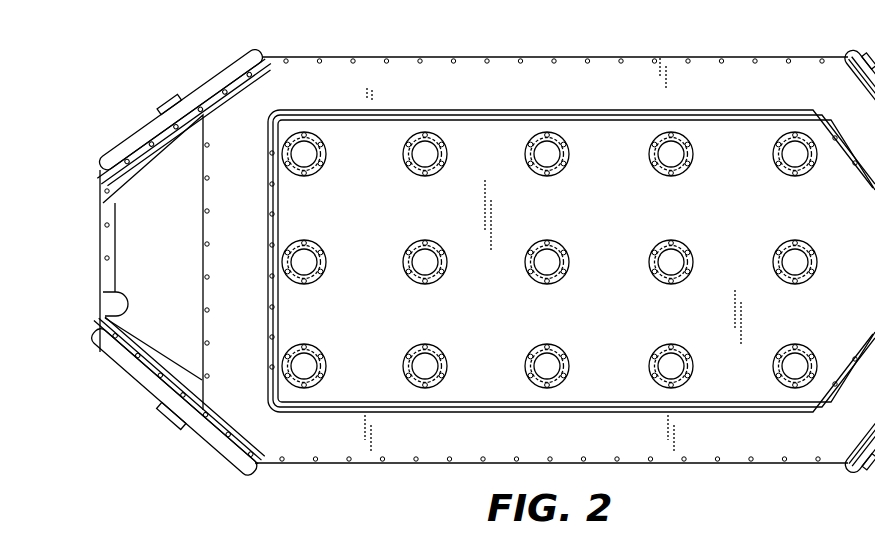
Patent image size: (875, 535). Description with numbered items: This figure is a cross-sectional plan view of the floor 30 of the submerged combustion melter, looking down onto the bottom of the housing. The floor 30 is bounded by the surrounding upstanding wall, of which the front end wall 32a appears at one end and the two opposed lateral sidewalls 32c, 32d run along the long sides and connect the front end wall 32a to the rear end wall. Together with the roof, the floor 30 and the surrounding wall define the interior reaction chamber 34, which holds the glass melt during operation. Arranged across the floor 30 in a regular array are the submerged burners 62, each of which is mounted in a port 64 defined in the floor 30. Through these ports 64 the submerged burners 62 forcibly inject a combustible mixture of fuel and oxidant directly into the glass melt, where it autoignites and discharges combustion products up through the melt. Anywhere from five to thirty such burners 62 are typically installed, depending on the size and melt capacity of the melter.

The floor 30 is at (621, 219).
The front end wall 32a is at (233, 256).
The lateral sidewall 32c is at (540, 90).
The lateral sidewall 32d is at (637, 445).
The interior reaction chamber 34 is at (718, 118).
The submerged burner 62 is at (307, 154).
The port 64 is at (310, 174).